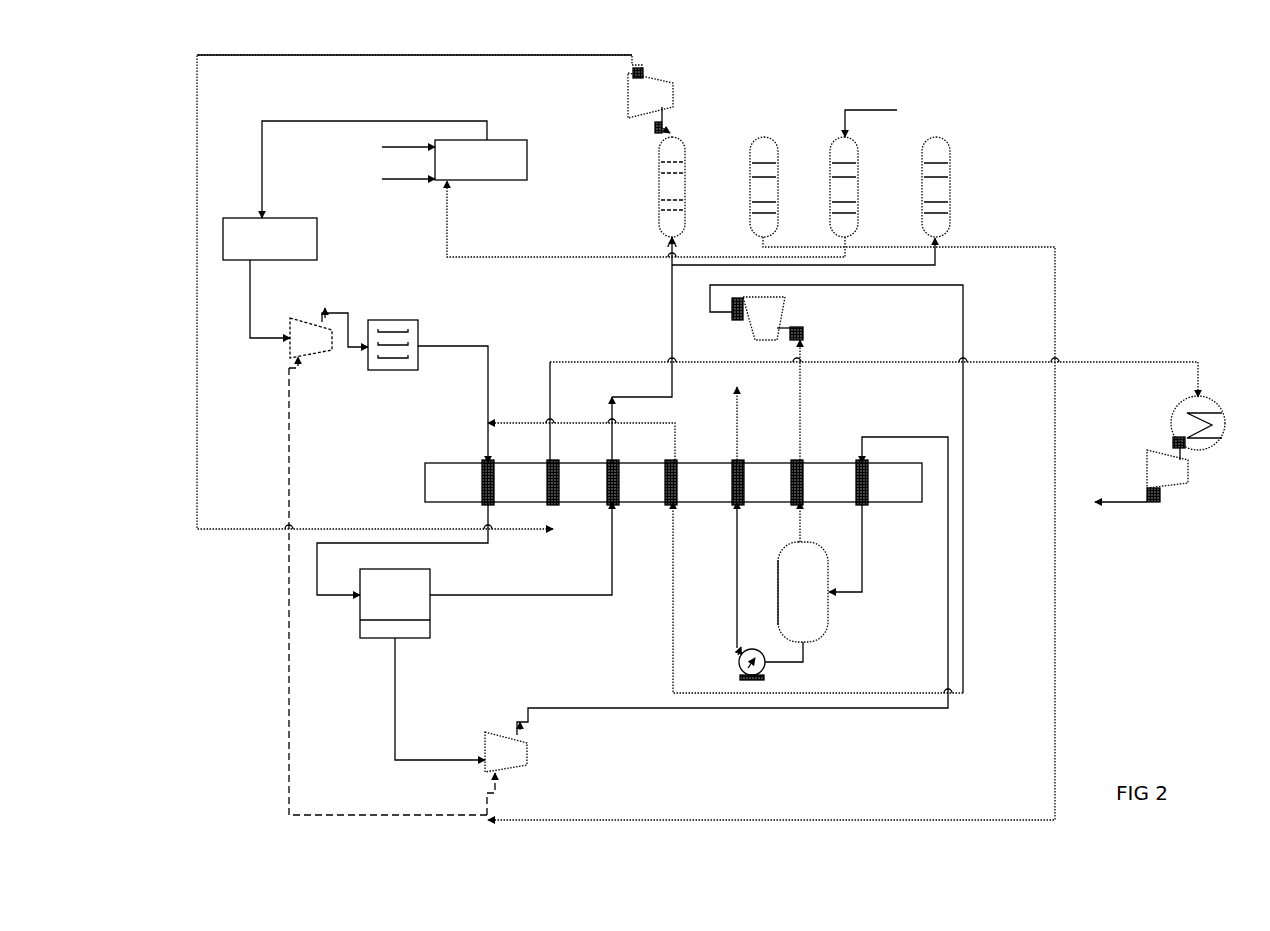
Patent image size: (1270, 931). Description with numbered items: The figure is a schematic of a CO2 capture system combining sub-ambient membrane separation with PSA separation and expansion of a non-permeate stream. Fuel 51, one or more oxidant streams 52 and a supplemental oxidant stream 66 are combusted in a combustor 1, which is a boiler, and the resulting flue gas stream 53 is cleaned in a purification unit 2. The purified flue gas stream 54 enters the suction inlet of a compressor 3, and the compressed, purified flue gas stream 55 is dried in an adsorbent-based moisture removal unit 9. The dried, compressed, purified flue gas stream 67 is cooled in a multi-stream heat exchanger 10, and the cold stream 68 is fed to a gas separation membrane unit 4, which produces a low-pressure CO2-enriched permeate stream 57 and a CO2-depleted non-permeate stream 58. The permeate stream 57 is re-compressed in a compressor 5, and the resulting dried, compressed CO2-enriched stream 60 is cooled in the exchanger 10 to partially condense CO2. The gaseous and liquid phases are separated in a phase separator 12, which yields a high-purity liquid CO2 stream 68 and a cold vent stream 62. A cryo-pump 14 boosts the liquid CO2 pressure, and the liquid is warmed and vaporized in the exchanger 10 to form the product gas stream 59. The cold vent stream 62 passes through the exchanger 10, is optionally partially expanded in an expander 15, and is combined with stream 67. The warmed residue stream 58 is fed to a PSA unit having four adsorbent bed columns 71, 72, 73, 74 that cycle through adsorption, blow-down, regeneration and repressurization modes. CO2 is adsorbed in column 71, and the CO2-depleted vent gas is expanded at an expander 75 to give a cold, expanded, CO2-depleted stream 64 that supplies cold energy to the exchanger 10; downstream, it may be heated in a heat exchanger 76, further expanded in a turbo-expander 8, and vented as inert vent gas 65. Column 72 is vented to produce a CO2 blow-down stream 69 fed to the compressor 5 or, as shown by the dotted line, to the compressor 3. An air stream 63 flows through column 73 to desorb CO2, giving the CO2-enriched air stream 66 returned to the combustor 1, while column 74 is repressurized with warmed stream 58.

The combustor 1 is at (481, 160).
The purification unit 2 is at (270, 239).
The compressor 3 is at (311, 338).
The gas separation membrane unit 4 is at (395, 603).
The compressor 5 is at (506, 752).
The turbo-expander 8 is at (1167, 475).
The adsorbent-based moisture removal unit 9 is at (393, 337).
The heat exchanger 10 is at (673, 482).
The phase separator 12 is at (803, 592).
The cryo-pump 14 is at (733, 591).
The expander 15 is at (836, 489).
The fuel 51 is at (394, 147).
The oxidant stream 52 is at (394, 187).
The flue gas stream 53 is at (363, 169).
The purified flue gas stream 54 is at (270, 299).
The compressed, purified flue gas stream 55 is at (345, 316).
The CO2 enriched permeate stream 57 is at (429, 699).
The CO2 depleted non-permeate stream 58 is at (521, 559).
The product gas stream 59 is at (723, 425).
The dried and compressed CO2 enriched stream 60 is at (732, 589).
The cold vent stream 62 is at (812, 522).
The air stream 63 is at (881, 120).
The cold, expanded, CO2-depleted stream 64 is at (419, 292).
The inert vent gas 65 is at (1121, 512).
The supplemental oxidant stream 66 is at (646, 219).
The dried, compressed, purified flue gas stream 67 is at (463, 404).
The cold, dried, compressed, purified flue gas stream 68 is at (571, 589).
The CO2 blow-down stream 69 is at (771, 528).
The adsorbent bed column 71 is at (661, 187).
The adsorbent bed column 72 is at (751, 187).
The adsorbent bed column 73 is at (854, 187).
The adsorbent bed column 74 is at (946, 187).
The expander 75 is at (793, 170).
The heat exchanger 76 is at (1198, 414).